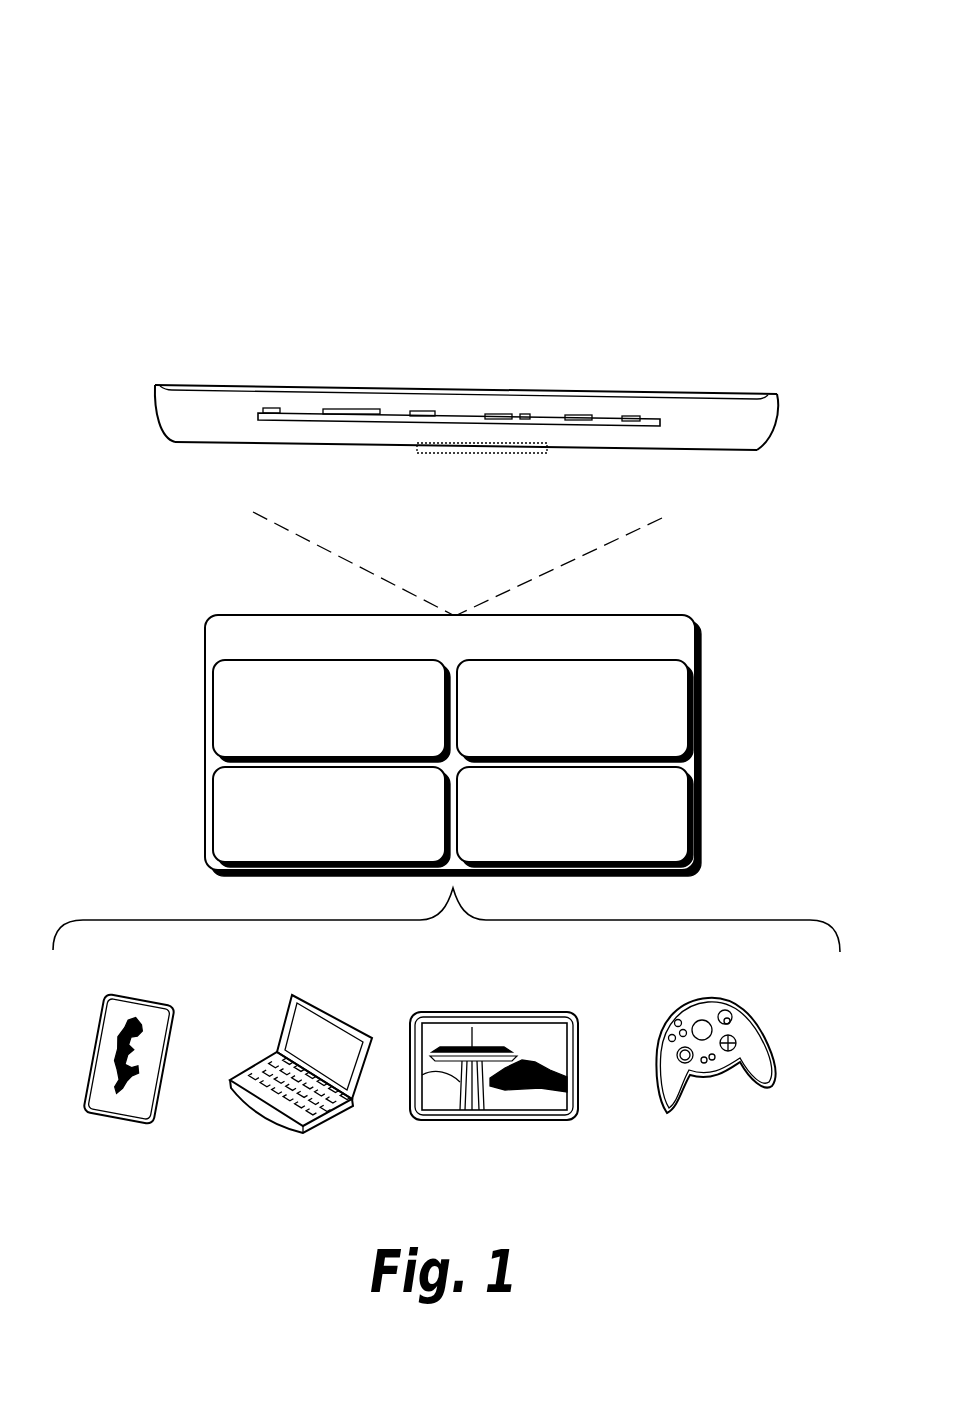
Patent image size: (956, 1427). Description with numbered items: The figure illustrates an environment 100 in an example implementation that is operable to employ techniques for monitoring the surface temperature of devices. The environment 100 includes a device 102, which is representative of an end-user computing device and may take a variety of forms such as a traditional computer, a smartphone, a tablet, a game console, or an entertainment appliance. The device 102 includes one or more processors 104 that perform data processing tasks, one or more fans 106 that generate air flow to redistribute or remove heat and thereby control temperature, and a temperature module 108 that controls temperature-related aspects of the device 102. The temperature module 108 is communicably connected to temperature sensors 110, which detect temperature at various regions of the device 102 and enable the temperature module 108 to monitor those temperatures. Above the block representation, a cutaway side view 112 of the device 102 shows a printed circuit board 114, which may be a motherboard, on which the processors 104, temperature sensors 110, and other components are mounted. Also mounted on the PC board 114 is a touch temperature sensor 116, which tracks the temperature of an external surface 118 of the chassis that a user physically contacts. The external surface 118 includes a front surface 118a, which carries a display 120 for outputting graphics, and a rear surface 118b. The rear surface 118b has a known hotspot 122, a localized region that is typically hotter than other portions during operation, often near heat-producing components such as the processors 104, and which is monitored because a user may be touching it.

The environment 100 is at (138, 73).
The device 102 is at (520, 649).
The processors 104 is at (418, 721).
The fans 106 is at (630, 721).
The temperature module 108 is at (390, 841).
The temperature sensors 110 is at (638, 841).
The cutaway side view 112 is at (168, 322).
The printed circuit board 114 is at (597, 419).
The touch temperature sensor 116 is at (420, 412).
The external surface 118 is at (157, 390).
The front surface 118a is at (257, 386).
The rear surface 118b is at (257, 444).
The display 120 is at (397, 390).
The hotspot 122 is at (482, 449).